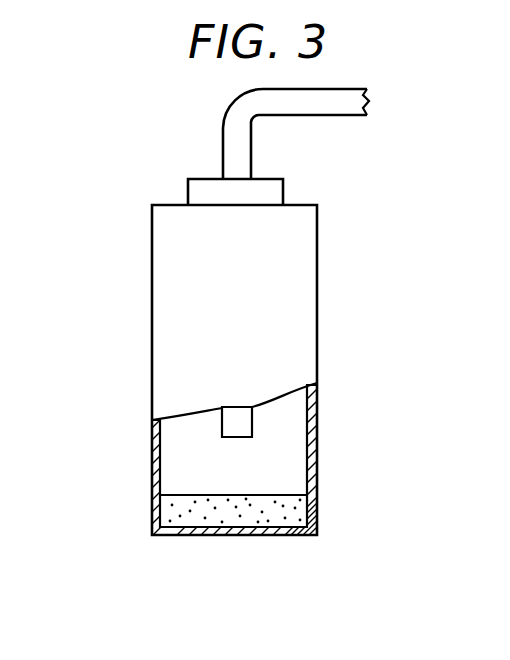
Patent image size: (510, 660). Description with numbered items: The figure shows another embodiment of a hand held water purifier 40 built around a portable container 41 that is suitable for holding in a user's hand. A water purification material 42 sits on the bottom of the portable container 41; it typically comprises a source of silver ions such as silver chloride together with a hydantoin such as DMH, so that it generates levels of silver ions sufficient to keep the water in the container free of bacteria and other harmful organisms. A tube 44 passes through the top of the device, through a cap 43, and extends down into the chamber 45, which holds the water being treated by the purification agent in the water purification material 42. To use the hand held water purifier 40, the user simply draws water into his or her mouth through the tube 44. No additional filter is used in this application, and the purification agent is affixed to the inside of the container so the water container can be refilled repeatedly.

The hand held water purifier 40 is at (328, 272).
The portable container 41 is at (302, 328).
The water purification material 42 is at (270, 503).
The cap 43 is at (281, 188).
The tube 44 is at (326, 92).
The chamber 45 is at (275, 420).